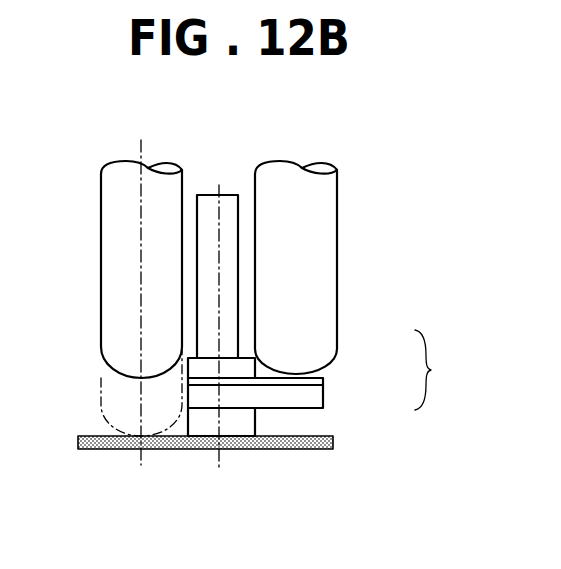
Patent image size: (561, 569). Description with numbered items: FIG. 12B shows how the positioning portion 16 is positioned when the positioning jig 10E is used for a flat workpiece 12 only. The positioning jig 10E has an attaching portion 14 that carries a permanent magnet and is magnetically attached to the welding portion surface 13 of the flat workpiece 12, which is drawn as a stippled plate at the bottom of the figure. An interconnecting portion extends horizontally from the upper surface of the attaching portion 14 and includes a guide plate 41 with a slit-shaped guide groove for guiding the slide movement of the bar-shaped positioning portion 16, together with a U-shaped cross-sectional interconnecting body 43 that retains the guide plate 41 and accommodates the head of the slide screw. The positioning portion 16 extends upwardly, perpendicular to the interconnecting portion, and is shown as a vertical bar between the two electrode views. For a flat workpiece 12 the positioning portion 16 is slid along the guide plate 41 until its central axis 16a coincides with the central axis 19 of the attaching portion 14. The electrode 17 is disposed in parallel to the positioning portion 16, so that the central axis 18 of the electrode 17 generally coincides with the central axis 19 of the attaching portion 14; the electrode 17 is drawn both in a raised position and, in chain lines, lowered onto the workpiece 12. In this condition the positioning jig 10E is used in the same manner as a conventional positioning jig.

The positioning jig 10E is at (353, 159).
The workpiece 12 is at (325, 445).
The welding portion surface 13 is at (95, 434).
The attaching portion 14 is at (235, 422).
The positioning portion 16 is at (220, 195).
The central axis of the positioning portion 16a is at (219, 297).
The electrode 17 is at (100, 268).
The central axis of the electrode 18 is at (141, 210).
The central axis of the attaching portion 19 is at (219, 462).
The guide plate 41 is at (313, 382).
The interconnecting body 43 is at (313, 397).